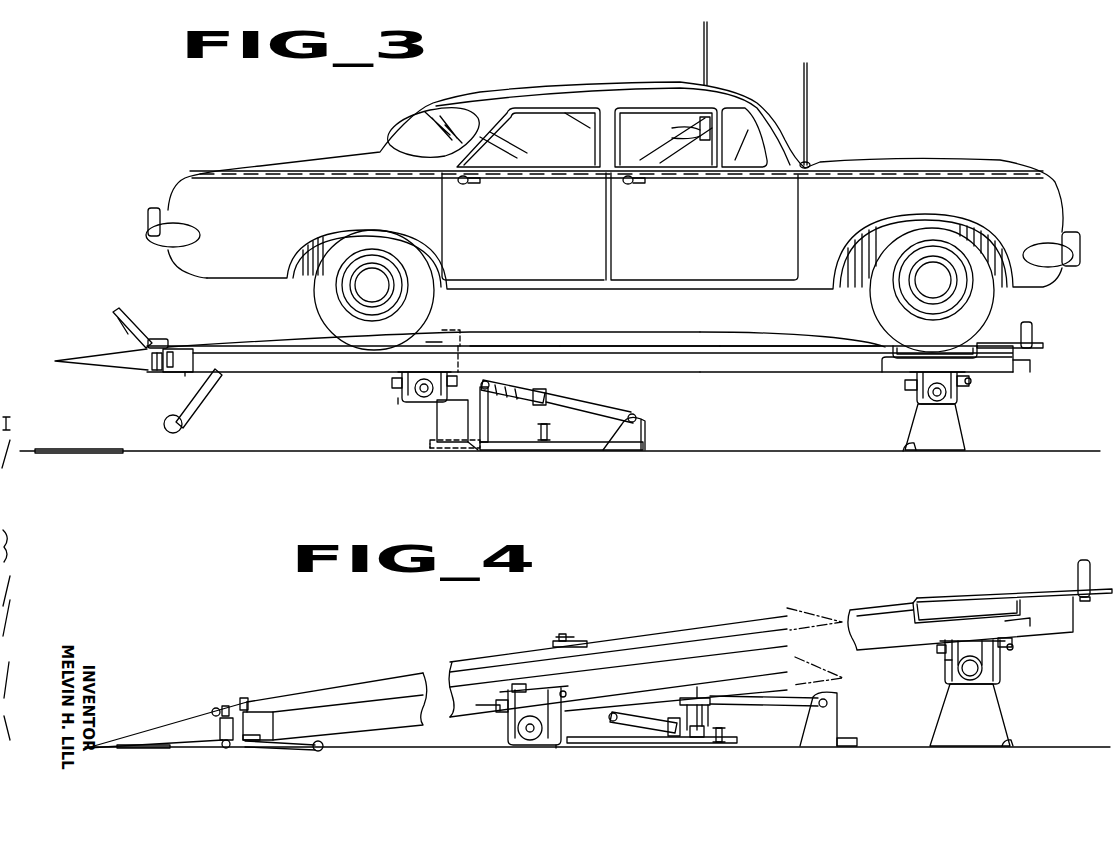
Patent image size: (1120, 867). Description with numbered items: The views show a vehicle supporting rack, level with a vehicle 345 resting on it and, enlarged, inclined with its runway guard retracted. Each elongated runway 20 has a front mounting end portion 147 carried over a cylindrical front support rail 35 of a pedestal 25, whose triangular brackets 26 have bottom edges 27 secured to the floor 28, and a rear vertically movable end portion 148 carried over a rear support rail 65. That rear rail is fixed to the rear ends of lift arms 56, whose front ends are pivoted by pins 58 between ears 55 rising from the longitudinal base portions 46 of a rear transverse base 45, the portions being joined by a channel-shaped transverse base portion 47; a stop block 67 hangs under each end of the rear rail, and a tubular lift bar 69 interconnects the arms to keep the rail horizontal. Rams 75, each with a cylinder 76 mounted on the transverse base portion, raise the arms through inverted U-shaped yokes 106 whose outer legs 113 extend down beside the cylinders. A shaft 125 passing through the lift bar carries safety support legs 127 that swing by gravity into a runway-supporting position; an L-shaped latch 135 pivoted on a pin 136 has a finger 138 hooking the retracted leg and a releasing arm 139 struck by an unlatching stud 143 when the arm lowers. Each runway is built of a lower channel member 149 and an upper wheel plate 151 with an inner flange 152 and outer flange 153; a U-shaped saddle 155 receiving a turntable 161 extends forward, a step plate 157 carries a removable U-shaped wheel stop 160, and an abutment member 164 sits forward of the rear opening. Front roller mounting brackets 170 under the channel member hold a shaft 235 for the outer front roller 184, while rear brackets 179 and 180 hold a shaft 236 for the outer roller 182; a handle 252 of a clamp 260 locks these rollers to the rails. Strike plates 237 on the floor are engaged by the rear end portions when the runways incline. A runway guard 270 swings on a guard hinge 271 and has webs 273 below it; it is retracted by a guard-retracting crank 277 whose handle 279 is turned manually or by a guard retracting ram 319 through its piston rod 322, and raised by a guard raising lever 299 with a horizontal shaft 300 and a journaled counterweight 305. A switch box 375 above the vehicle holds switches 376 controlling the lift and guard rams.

In FIG. 3, the runway 20 is at (652, 331).
In FIG. 4, the runway 20 is at (537, 660).
In FIG. 3, the pedestal 25 is at (908, 421).
In FIG. 4, the pedestal 25 is at (1007, 722).
In FIG. 3, the inner and outer brackets 26 is at (968, 441).
In FIG. 4, the inner and outer brackets 26 is at (960, 737).
In FIG. 3, the bottom edges 27 is at (904, 447).
In FIG. 4, the bottom edges 27 is at (1014, 742).
In FIG. 3, the floor 28 is at (797, 450).
In FIG. 4, the floor 28 is at (865, 746).
In FIG. 3, the front support rail 35 is at (926, 393).
In FIG. 4, the front support rail 35 is at (947, 683).
In FIG. 3, the rear transverse base 45 is at (402, 403).
In FIG. 4, the rear transverse base 45 is at (553, 748).
In FIG. 3, the longitudinal base portions 46 is at (512, 446).
In FIG. 4, the longitudinal base portions 46 is at (687, 744).
In FIG. 3, the transverse base portion 47 is at (476, 453).
In FIG. 3, the ears 55 is at (646, 428).
In FIG. 4, the ears 55 is at (839, 711).
In FIG. 3, the lift arms 56 is at (605, 407).
In FIG. 4, the lift arms 56 is at (785, 698).
In FIG. 3, the pins 58 is at (640, 417).
In FIG. 4, the pins 58 is at (830, 702).
In FIG. 3, the rear support rail 65 is at (414, 392).
In FIG. 4, the rear support rail 65 is at (505, 733).
In FIG. 3, the stop block 67 is at (421, 397).
In FIG. 4, the stop block 67 is at (526, 733).
In FIG. 3, the lift bar 69 is at (488, 380).
In FIG. 4, the lift bar 69 is at (616, 713).
In FIG. 3, the rams 75 is at (428, 443).
In FIG. 4, the rams 75 is at (594, 642).
In FIG. 3, the cylinder 76 is at (440, 448).
In FIG. 3, the yokes 106 is at (428, 342).
In FIG. 4, the yokes 106 is at (583, 641).
In FIG. 3, the outer legs 113 is at (462, 332).
In FIG. 3, the shaft 125 is at (452, 420).
In FIG. 4, the shaft 125 is at (566, 738).
In FIG. 3, the safety support legs 127 is at (490, 410).
In FIG. 4, the safety support legs 127 is at (650, 731).
In FIG. 3, the latch 135 is at (560, 389).
In FIG. 4, the latch 135 is at (703, 686).
In FIG. 4, the pin 136 is at (697, 688).
In FIG. 4, the finger 138 is at (698, 738).
In FIG. 4, the releasing arm 139 is at (712, 708).
In FIG. 3, the unlatching stud 143 is at (548, 438).
In FIG. 4, the unlatching stud 143 is at (723, 743).
In FIG. 3, the front mounting end portion 147 is at (838, 346).
In FIG. 4, the front mounting end portion 147 is at (1035, 594).
In FIG. 3, the rear vertically movable end portion 148 is at (60, 360).
In FIG. 4, the rear vertically movable end portion 148 is at (147, 730).
In FIG. 3, the channel member 149 is at (760, 372).
In FIG. 4, the channel member 149 is at (855, 641).
In FIG. 3, the wheel plate 151 is at (482, 346).
In FIG. 4, the wheel plate 151 is at (622, 660).
In FIG. 3, the inner flange 152 is at (540, 336).
In FIG. 4, the inner flange 152 is at (387, 680).
In FIG. 3, the outer flange 153 is at (594, 347).
In FIG. 4, the outer flange 153 is at (392, 705).
In FIG. 3, the saddle 155 is at (1018, 369).
In FIG. 4, the saddle 155 is at (1031, 620).
In FIG. 3, the step plate 157 is at (995, 343).
In FIG. 4, the step plate 157 is at (1062, 591).
In FIG. 3, the wheel stop 160 is at (1032, 325).
In FIG. 4, the wheel stop 160 is at (1090, 558).
In FIG. 3, the turntables 161 is at (941, 346).
In FIG. 4, the turntables 161 is at (916, 603).
In FIG. 3, the abutment member 164 is at (160, 340).
In FIG. 4, the abutment member 164 is at (245, 698).
In FIG. 3, the front roller mounting brackets 170 is at (905, 384).
In FIG. 4, the front roller mounting brackets 170 is at (937, 649).
In FIG. 4, the brackets 179 is at (502, 700).
In FIG. 4, the brackets 180 is at (570, 657).
In FIG. 3, the outer roller 182 is at (393, 381).
In FIG. 4, the outer roller 182 is at (525, 689).
In FIG. 3, the outer roller 184 is at (892, 364).
In FIG. 4, the outer roller 184 is at (967, 640).
In FIG. 4, the shaft 235 is at (950, 670).
In FIG. 4, the shaft 236 is at (566, 694).
In FIG. 3, the strike plates 237 is at (100, 450).
In FIG. 4, the strike plates 237 is at (138, 749).
In FIG. 3, the handle 252 is at (400, 376).
In FIG. 4, the handle 252 is at (490, 712).
In FIG. 3, the clamps 260 is at (397, 368).
In FIG. 4, the clamps 260 is at (498, 739).
In FIG. 3, the runway guards 270 is at (122, 313).
In FIG. 4, the guard hinges 271 is at (212, 708).
In FIG. 3, the webs 273 is at (120, 328).
In FIG. 3, the guard-retracting crank 277 is at (185, 350).
In FIG. 4, the guard-retracting crank 277 is at (258, 742).
In FIG. 3, the handle 279 is at (186, 374).
In FIG. 4, the handle 279 is at (276, 725).
In FIG. 3, the guard raising lever 299 is at (205, 406).
In FIG. 4, the guard raising lever 299 is at (314, 751).
In FIG. 4, the horizontal shaft 300 is at (323, 749).
In FIG. 3, the counterweight 305 is at (182, 424).
In FIG. 4, the counterweight 305 is at (227, 749).
In FIG. 3, the guard retracting rams 319 is at (154, 368).
In FIG. 4, the guard retracting rams 319 is at (224, 740).
In FIG. 4, the piston rods 322 is at (225, 704).
In FIG. 3, the vehicle 345 is at (662, 223).
In FIG. 3, the switch box 375 is at (708, 117).
In FIG. 3, the switches 376 is at (672, 134).